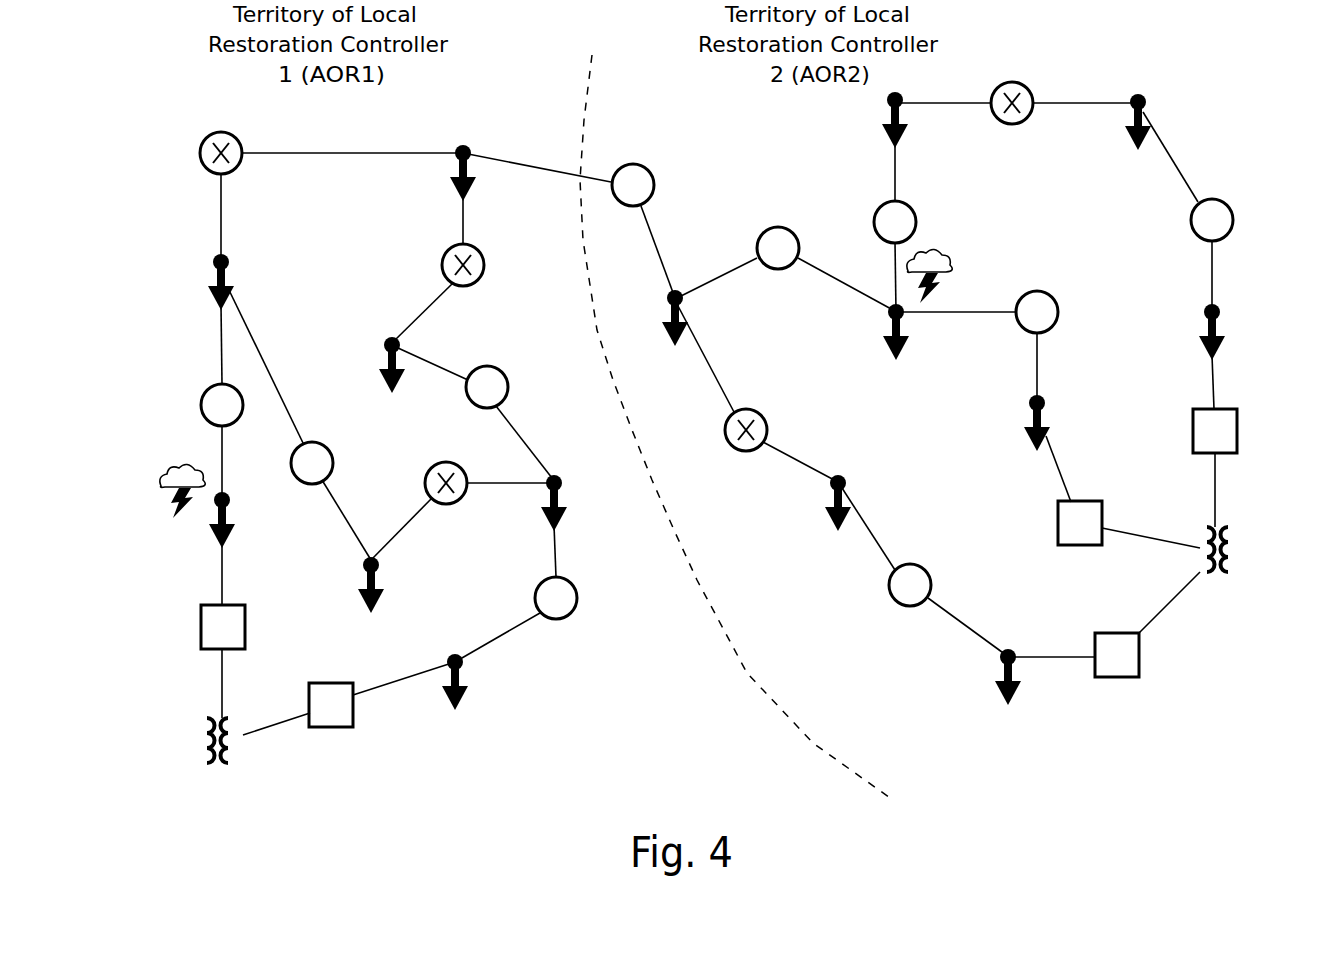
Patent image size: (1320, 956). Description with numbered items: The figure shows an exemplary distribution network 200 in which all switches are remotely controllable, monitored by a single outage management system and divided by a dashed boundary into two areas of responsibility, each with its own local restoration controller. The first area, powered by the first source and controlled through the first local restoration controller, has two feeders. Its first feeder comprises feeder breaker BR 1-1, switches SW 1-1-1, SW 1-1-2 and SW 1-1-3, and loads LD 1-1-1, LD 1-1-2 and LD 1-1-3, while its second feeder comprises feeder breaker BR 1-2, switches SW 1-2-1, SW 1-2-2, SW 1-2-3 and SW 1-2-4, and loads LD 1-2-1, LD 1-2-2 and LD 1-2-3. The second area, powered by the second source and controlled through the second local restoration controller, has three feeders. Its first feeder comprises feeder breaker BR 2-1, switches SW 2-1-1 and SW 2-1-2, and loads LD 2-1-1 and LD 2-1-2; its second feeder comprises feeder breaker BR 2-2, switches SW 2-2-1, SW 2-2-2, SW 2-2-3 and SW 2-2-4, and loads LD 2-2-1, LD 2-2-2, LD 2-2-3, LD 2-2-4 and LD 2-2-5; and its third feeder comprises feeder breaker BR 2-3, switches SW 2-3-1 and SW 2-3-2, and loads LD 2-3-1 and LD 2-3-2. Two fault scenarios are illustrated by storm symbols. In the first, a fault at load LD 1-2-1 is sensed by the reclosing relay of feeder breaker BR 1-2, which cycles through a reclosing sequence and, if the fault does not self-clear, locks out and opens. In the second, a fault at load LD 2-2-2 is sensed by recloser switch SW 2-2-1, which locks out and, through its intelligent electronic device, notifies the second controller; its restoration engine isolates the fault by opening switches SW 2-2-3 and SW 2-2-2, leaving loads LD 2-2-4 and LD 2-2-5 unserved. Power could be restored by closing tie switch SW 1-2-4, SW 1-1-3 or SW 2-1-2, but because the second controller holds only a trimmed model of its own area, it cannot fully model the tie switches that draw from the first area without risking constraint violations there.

The network 200 is at (790, 626).
The switch SW 1-2-4 is at (253, 135).
The load LD 2-2-5 is at (469, 147).
The load LD 1-2-2 is at (199, 259).
The switch SW 1-1-3 is at (420, 254).
The load LD 1-1-3 is at (365, 348).
The switch SW 1-1-2 is at (512, 364).
The switch SW 1-2-3 is at (200, 377).
The switch SW 1-2-2 is at (421, 458).
The load LD 1-1-2 is at (577, 472).
The switch SW 1-2-1 is at (300, 492).
The load LD 1-2-1 is at (199, 535).
The load LD 1-2-3 is at (400, 583).
The feeder breaker BR 1-2 is at (202, 646).
The switch SW 1-1-1 is at (576, 625).
The load LD 1-1-1 is at (482, 684).
The feeder breaker BR 1-1 is at (355, 725).
The switch SW 2-2-4 is at (662, 164).
The switch SW 2-2-3 is at (787, 219).
The load LD 2-2-4 is at (709, 314).
The switch SW 2-3-2 is at (1016, 76).
The load LD 2-2-3 is at (921, 127).
The switch SW 2-2-2 is at (925, 209).
The load LD 2-3-2 is at (1166, 105).
The switch SW 2-3-1 is at (1226, 192).
The load LD 2-2-2 is at (869, 330).
The switch SW 2-2-1 is at (1065, 294).
The load LD 2-3-1 is at (1186, 307).
The switch SW 2-1-2 is at (736, 458).
The load LD 2-1-2 is at (860, 478).
The load LD 2-2-1 is at (1010, 405).
The feeder breaker BR 2-3 is at (1190, 416).
The feeder breaker BR 2-2 is at (1058, 538).
The switch SW 2-1-1 is at (893, 601).
The load LD 2-1-1 is at (1028, 647).
The feeder breaker BR 2-1 is at (1140, 679).